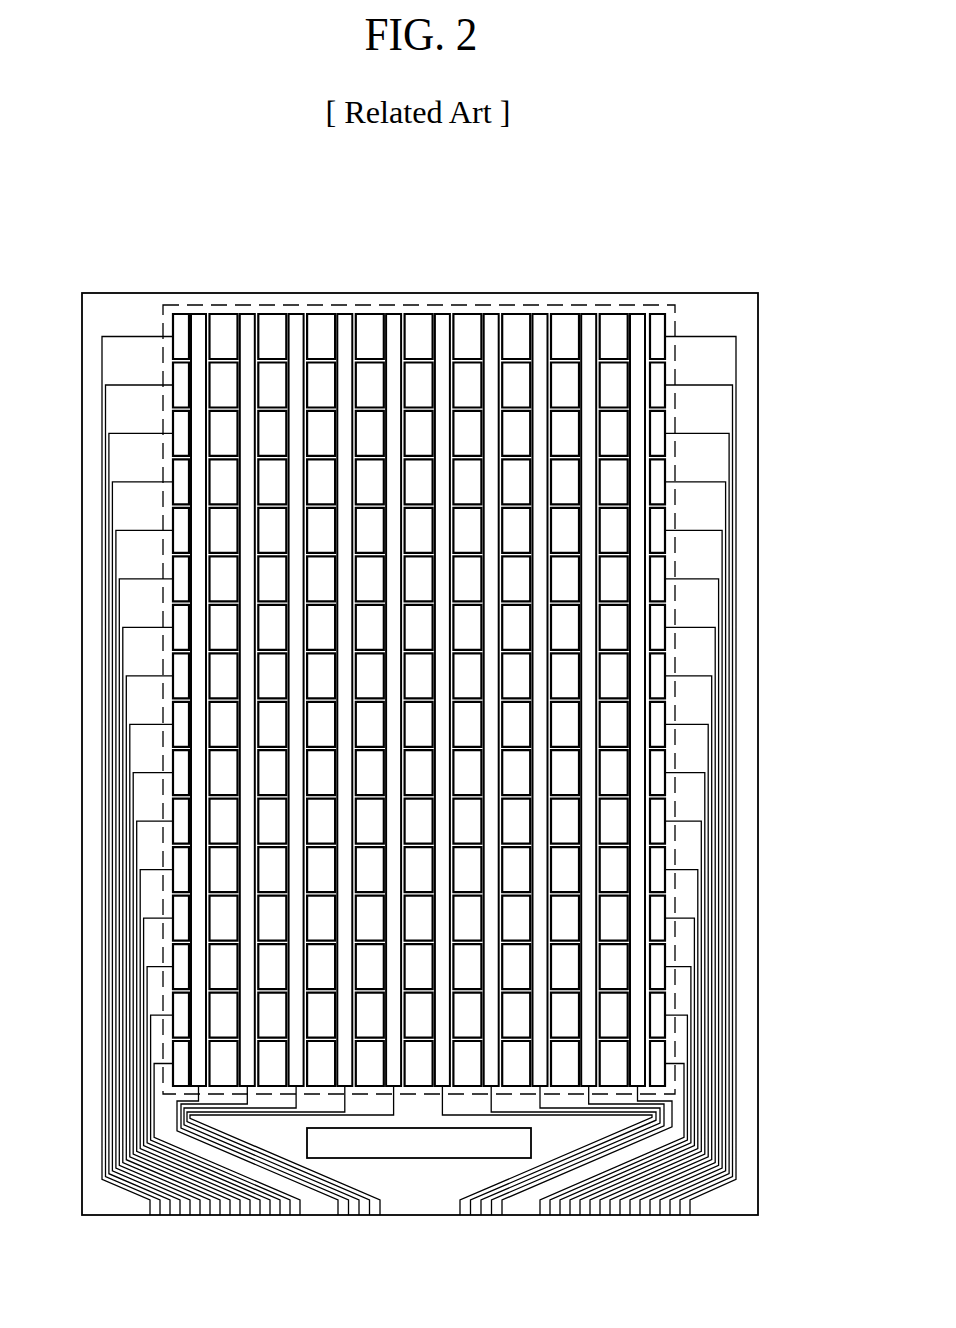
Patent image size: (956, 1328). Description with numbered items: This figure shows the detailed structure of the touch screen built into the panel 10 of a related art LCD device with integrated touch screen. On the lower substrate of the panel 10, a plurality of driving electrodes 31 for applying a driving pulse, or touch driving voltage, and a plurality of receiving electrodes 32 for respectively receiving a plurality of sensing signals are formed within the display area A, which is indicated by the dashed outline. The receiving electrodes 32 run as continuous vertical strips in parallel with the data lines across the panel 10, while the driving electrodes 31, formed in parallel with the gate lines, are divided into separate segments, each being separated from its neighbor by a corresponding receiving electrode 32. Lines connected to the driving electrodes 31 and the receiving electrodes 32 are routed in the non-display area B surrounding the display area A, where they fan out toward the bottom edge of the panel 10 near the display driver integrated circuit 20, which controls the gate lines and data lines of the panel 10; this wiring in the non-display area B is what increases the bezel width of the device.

The panel 10 is at (759, 737).
The display driver integrated circuit (DDI) 20 is at (418, 1158).
The driving electrodes 31 is at (178, 322).
The receiving electrodes 32 is at (247, 322).
The display area A is at (675, 400).
The non-display area B is at (745, 605).